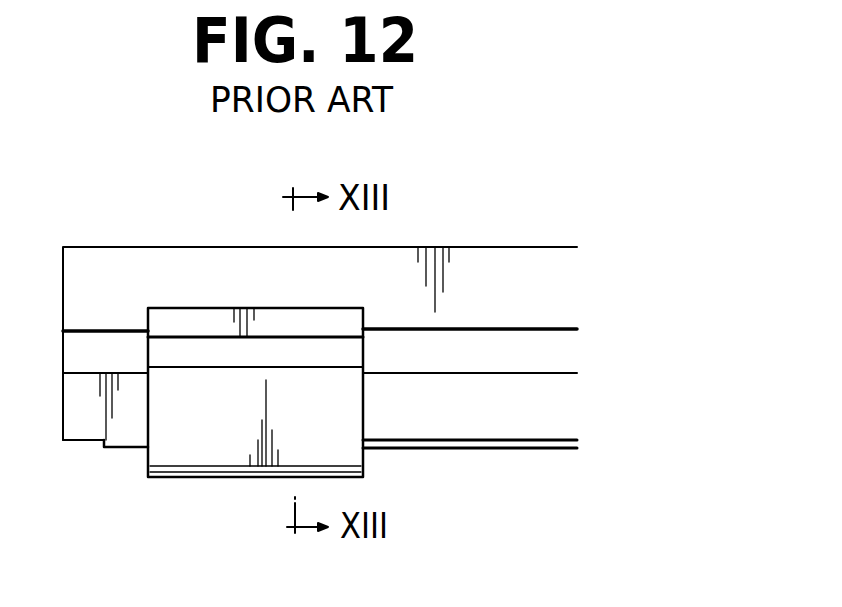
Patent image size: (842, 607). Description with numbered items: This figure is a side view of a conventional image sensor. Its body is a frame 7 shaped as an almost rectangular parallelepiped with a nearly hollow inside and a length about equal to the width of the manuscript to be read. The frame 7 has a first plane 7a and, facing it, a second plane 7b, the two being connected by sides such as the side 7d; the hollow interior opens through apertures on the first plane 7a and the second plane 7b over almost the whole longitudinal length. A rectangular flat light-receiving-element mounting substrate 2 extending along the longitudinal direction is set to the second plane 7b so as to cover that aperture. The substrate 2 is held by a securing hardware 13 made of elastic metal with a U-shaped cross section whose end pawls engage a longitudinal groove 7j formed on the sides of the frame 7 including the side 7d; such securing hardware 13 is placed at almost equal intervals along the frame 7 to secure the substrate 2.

The frame 7 is at (100, 243).
The first plane 7a is at (175, 247).
The side 7d is at (470, 268).
The second plane 7b is at (82, 441).
The groove 7j is at (445, 358).
The light-receiving-element mounting substrate 2 is at (125, 449).
The securing hardware 13 is at (214, 449).